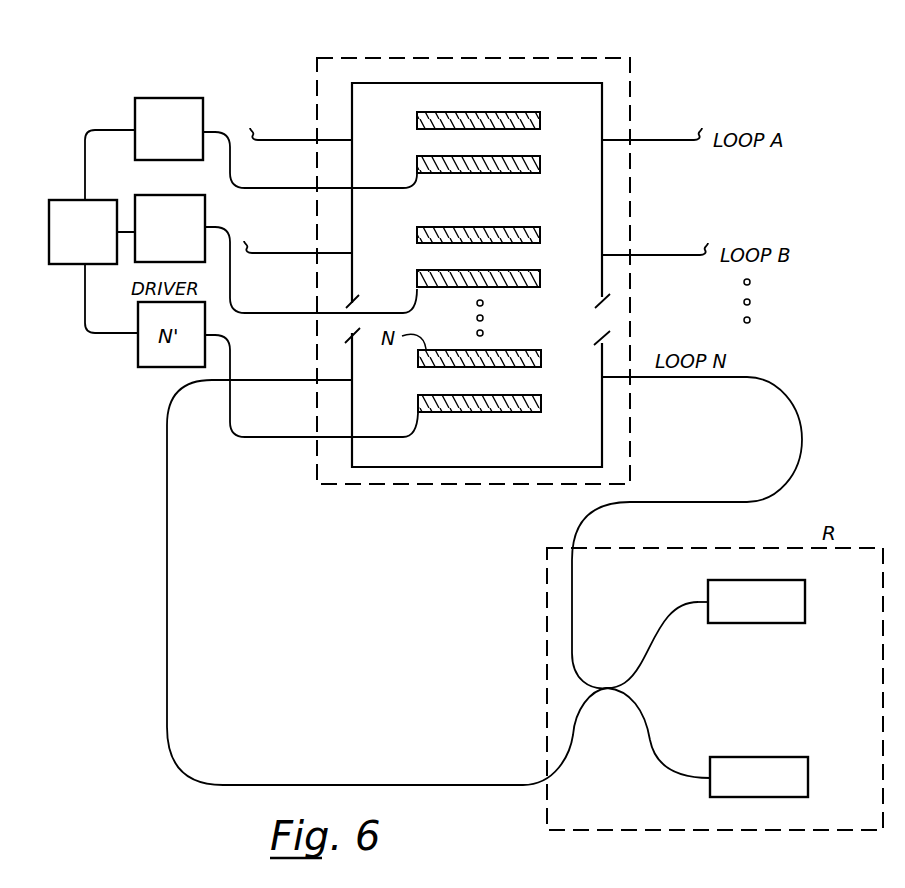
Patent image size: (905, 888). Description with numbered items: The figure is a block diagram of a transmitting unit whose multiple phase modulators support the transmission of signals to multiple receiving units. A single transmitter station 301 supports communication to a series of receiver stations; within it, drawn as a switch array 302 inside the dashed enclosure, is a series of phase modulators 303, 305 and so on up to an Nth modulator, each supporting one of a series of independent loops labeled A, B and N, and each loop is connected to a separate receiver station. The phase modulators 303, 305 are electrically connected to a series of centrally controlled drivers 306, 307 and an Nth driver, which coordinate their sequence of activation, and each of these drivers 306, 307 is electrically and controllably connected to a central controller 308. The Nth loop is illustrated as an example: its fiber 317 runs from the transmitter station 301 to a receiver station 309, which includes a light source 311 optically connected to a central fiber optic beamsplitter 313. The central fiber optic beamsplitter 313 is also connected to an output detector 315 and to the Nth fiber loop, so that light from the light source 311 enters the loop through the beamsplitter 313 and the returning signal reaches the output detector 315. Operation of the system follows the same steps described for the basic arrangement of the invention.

The transmitter station 301 is at (390, 58).
The optical switch array 302 is at (582, 83).
The phase modulator 303 is at (428, 112).
The phase modulator 305 is at (432, 226).
The centrally controlled driver 306 is at (251, 137).
The centrally controlled driver 307 is at (273, 242).
The central controller 308 is at (74, 255).
The receiver station 309 is at (714, 548).
The light source 311 is at (751, 626).
The central fiber optic beamsplitter 313 is at (607, 686).
The output detector 315 is at (752, 764).
The optical fiber 317 is at (167, 598).